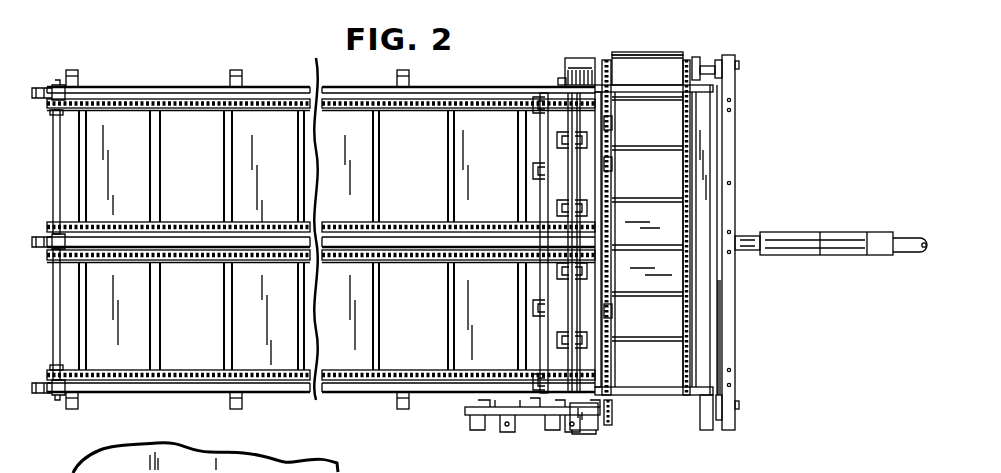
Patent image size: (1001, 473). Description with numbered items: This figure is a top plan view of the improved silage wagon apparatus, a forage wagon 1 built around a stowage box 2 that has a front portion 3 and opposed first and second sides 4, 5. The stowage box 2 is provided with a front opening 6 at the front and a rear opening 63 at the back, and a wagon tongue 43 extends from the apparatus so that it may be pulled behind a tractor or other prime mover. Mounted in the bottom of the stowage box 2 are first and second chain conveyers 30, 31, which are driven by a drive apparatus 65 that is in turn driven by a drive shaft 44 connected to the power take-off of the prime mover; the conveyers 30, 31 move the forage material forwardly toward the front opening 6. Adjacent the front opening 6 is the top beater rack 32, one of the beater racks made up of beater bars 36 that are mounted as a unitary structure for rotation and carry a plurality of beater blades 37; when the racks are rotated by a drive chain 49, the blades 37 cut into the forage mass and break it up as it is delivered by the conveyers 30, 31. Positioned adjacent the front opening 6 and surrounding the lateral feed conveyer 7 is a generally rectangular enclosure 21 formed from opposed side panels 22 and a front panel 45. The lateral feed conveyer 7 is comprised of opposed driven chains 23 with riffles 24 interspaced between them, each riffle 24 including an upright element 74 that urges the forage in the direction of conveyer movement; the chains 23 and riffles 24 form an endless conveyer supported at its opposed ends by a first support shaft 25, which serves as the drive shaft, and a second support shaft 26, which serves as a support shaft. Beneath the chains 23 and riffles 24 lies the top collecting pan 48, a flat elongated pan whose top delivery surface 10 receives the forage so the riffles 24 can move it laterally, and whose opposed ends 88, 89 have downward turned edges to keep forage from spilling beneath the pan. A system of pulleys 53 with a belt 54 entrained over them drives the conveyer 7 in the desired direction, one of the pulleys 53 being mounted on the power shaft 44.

The forage wagon 1 is at (198, 57).
The stowage box 2 is at (263, 87).
The front portion 3 is at (557, 70).
The first side 4 is at (351, 86).
The second side 5 is at (345, 395).
The front opening 6 is at (620, 216).
The lateral feed conveyer 7 is at (662, 44).
The top delivery surface 10 is at (665, 280).
The rectangular enclosure 21 is at (732, 159).
The side panel 22 is at (662, 88).
The driven chain 23 is at (683, 262).
The riffle 24 is at (676, 56).
The first support shaft 25 is at (713, 410).
The second support shaft 26 is at (712, 60).
The first chain conveyer 30 is at (284, 391).
The second chain conveyer 31 is at (287, 100).
The top beater rack 32 is at (531, 201).
The beater bar 36 is at (545, 134).
The beater blade 37 is at (545, 171).
The wagon tongue 43 is at (888, 235).
The drive shaft 44 is at (827, 238).
The front panel 45 is at (718, 183).
The top collecting pan 48 is at (677, 225).
The drive chain 49 is at (576, 68).
The pulley 53 is at (735, 65).
The belt 54 is at (722, 333).
The rear opening 63 is at (59, 309).
The drive apparatus 65 is at (516, 443).
The upright element 74 is at (628, 55).
The end of collecting pan 88 is at (648, 398).
The end of collecting pan 89 is at (617, 70).